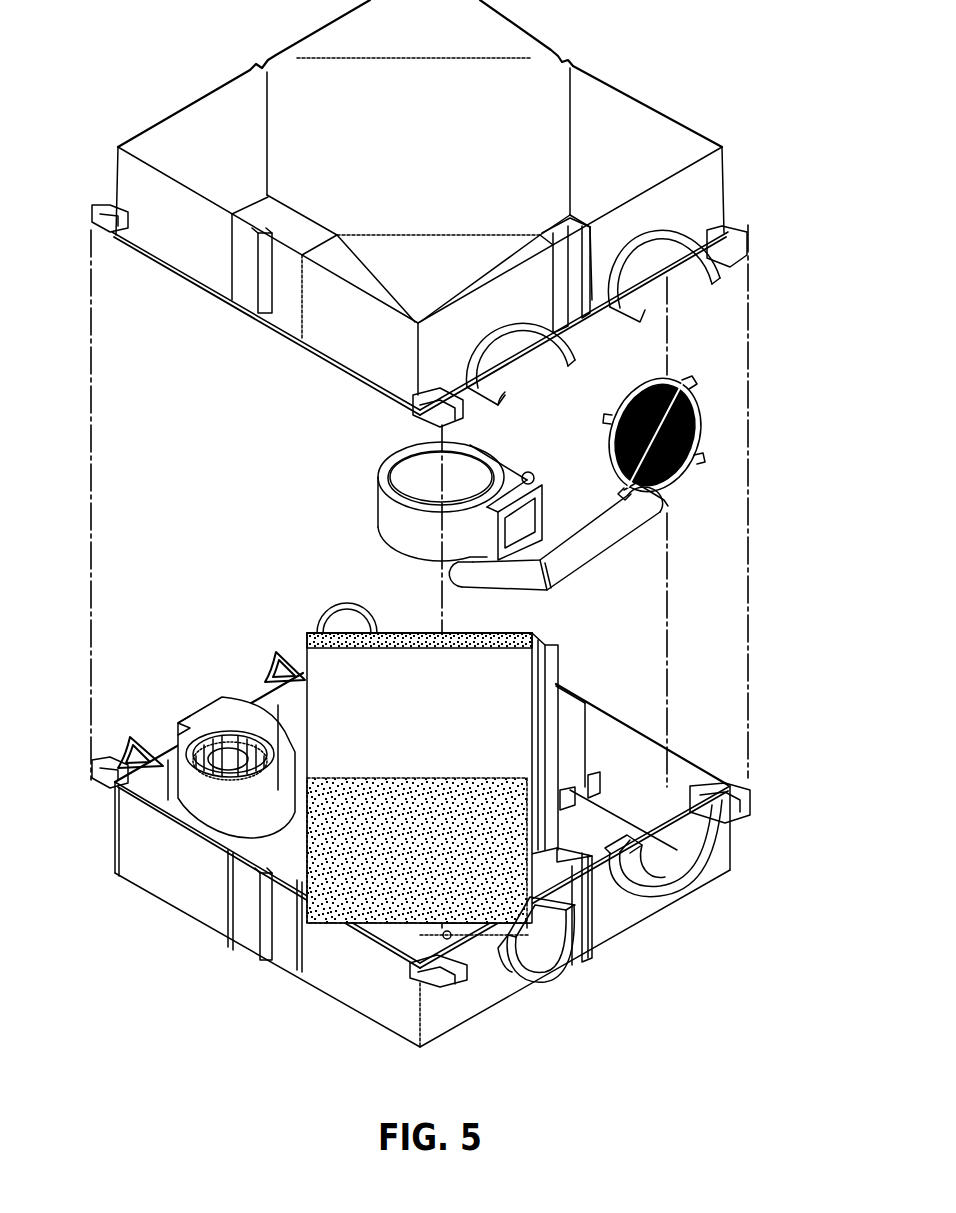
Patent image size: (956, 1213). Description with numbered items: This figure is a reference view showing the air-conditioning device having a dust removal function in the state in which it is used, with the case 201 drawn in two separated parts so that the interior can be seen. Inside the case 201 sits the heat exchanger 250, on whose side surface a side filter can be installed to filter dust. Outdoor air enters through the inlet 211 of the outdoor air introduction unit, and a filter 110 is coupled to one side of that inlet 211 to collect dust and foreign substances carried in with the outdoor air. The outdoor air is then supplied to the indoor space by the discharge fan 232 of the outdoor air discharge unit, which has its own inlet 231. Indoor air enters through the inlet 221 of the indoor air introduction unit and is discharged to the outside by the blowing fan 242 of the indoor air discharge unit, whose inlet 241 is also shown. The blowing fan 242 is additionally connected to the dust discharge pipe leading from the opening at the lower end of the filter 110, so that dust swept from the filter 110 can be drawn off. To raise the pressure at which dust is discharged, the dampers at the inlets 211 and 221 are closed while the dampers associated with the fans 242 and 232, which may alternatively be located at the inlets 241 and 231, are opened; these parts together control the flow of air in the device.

The case 201 is at (598, 132).
The filter 110 is at (628, 418).
The blowing fan 242 is at (407, 473).
The heat exchanger 250 is at (353, 697).
The inlet of the indoor air introduction unit 221 is at (283, 664).
The inlet of the outdoor air discharge unit 231 is at (128, 748).
The discharge fan 232 is at (196, 800).
The inlet of the outdoor air introduction unit 211 is at (683, 873).
The inlet of the indoor air discharge unit 241 is at (543, 953).